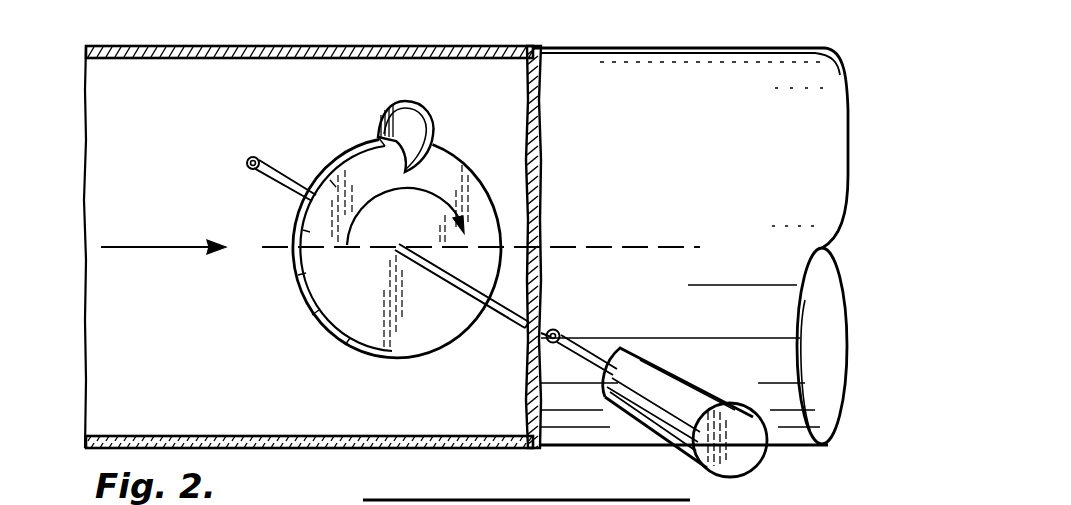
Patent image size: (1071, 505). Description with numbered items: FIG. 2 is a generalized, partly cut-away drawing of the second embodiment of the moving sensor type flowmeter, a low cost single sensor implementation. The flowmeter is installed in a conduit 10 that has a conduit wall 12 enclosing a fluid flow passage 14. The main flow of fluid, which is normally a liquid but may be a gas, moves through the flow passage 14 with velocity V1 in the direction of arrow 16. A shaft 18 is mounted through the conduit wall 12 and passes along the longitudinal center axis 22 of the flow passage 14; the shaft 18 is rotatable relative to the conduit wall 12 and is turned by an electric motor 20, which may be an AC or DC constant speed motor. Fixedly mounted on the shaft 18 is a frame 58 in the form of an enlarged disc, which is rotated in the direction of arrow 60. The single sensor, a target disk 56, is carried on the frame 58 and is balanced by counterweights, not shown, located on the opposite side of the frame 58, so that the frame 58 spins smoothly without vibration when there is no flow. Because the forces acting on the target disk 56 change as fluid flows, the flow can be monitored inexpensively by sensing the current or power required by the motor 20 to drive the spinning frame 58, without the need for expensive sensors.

The conduit 10 is at (630, 48).
The conduit wall 12 is at (714, 82).
The fluid flow passage 14 is at (212, 60).
The arrow 16 is at (179, 249).
The shaft 18 is at (523, 325).
The electric motor 20 is at (677, 388).
The longitudinal center axis 22 is at (650, 249).
The target disk 56 is at (383, 113).
The frame 58 is at (301, 307).
The arrow 60 is at (437, 187).